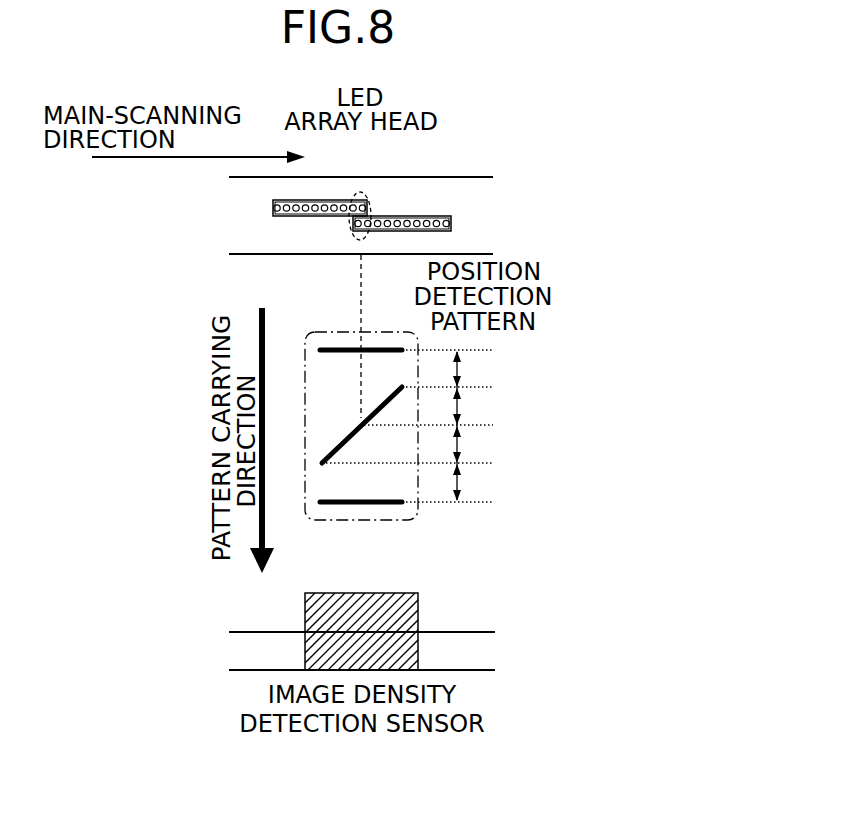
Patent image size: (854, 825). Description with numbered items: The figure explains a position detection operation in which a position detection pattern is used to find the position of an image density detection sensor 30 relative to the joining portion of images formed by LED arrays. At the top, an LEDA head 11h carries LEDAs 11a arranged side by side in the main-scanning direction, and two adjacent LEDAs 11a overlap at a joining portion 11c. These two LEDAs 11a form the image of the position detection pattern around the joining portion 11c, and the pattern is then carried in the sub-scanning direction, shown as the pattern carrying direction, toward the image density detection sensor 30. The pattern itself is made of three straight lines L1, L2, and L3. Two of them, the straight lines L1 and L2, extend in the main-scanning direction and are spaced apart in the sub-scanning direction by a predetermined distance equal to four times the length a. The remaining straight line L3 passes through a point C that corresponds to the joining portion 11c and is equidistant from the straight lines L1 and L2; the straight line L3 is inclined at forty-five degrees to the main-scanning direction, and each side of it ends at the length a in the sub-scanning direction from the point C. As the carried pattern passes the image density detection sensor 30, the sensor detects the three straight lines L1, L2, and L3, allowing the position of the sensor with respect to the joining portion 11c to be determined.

The LEDA head 11h is at (485, 178).
The LEDA 11a is at (280, 216).
The joining portion 11c is at (380, 237).
The image density detection sensor 30 is at (400, 593).
The straight line L1 is at (335, 505).
The straight line L2 is at (333, 348).
The straight line L3 is at (325, 458).
The point C is at (361, 422).
The length a is at (467, 426).